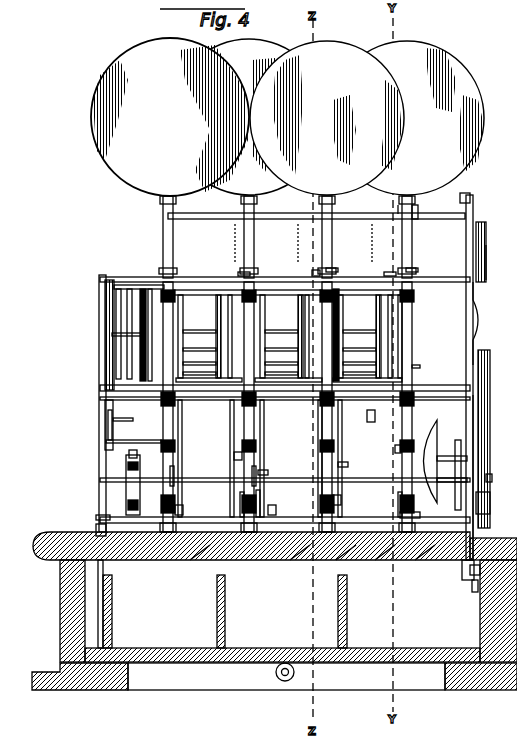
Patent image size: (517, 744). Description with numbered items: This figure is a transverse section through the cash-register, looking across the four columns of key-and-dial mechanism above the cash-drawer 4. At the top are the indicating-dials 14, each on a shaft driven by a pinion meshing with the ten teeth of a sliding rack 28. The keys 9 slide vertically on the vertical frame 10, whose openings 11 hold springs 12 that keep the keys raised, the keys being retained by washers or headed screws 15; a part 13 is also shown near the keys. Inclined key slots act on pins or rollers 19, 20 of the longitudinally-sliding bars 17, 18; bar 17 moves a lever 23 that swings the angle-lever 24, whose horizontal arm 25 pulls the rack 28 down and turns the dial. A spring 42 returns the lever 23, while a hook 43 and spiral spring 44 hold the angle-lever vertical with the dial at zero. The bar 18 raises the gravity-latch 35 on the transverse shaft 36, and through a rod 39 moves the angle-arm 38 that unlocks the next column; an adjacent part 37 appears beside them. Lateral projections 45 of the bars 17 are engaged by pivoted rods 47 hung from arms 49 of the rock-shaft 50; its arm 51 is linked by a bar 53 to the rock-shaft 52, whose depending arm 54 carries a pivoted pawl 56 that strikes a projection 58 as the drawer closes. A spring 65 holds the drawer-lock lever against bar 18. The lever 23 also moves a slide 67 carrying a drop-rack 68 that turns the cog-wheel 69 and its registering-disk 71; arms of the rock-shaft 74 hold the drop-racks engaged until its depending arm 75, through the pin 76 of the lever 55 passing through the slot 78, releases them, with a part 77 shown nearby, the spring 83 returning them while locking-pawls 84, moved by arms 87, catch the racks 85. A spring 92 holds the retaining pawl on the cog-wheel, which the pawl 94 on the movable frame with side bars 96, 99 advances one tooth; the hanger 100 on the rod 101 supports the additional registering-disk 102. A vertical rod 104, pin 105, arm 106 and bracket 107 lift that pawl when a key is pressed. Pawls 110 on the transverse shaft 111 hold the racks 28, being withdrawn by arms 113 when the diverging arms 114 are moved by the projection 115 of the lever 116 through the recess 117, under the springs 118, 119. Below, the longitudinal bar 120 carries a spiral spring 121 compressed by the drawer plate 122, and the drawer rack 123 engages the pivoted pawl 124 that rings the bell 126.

The cash-drawer 4 is at (466, 625).
The keys 9 is at (150, 444).
The vertical frame 10 is at (160, 400).
The openings 11 is at (264, 440).
The springs 12 is at (176, 418).
The rod 13 is at (228, 335).
The indicating-dials 14 is at (258, 46).
The washers or headed screws 15 is at (234, 458).
The longitudinally-sliding bar 17 is at (480, 308).
The longitudinally-sliding bar 18 is at (163, 518).
The pins or rollers 19 is at (492, 478).
The pins or rollers 20 is at (398, 500).
The lever 23 is at (148, 380).
The angle-lever 24 is at (140, 368).
The horizontal arm 25 is at (334, 272).
The sliding rack 28 is at (163, 238).
The gravity-latch 35 is at (386, 560).
The transverse shaft 36 is at (346, 560).
The table portion 37 is at (426, 560).
The angle-arm 38 is at (172, 560).
The rod 39 is at (210, 560).
The spring 42 is at (236, 432).
The lateral projection or hook 43 is at (388, 338).
The spiral spring 44 is at (265, 332).
The lateral projections 45 is at (183, 510).
The pivoted rods 47 is at (488, 258).
The arms 49 is at (351, 466).
The rock-shaft 50 is at (260, 510).
The arm 51 is at (130, 452).
The rock-shaft 52 is at (112, 576).
The bar 53 is at (128, 466).
The depending arm 54 is at (100, 518).
The lever 55 is at (106, 442).
The pivoted pawl 56 is at (60, 568).
The projection 58 is at (112, 588).
The spiral spring 65 is at (420, 516).
The slide 67 is at (265, 364).
The drop-rack 68 is at (183, 364).
The cog-wheel 69 is at (265, 350).
The registering-disk 71 is at (402, 306).
The rock-shaft 74 is at (105, 418).
The depending arm 75 is at (105, 438).
The pin 76 is at (130, 422).
The bracket 77 is at (490, 500).
The slot 78 is at (96, 528).
The spring 83 is at (128, 505).
The locking-pawls 84 is at (183, 324).
The racks 85 is at (183, 374).
The arms 87 is at (265, 375).
The spring 92 is at (216, 345).
The pawl 94 is at (174, 312).
The side bar 96 is at (242, 272).
The side bar 99 is at (314, 271).
The hanger 100 is at (116, 296).
The rod 101 is at (127, 320).
The additional registering-disk 102 is at (104, 360).
The vertical rod 104 is at (182, 450).
The transverse pin or bar 105 is at (192, 276).
The arm 106 is at (268, 474).
The bracket 107 is at (217, 582).
The spring-actuated pawls 110 is at (418, 210).
The transverse shaft 111 is at (288, 216).
The arms 113 is at (397, 212).
The diverging arms 114 is at (474, 204).
The lateral projection 115 is at (472, 196).
The lever 116 is at (474, 410).
The recess 117 is at (462, 572).
The spring 118 is at (492, 355).
The spring 119 is at (486, 250).
The longitudinal bar 120 is at (270, 676).
The spiral spring 121 is at (316, 672).
The plate 122 is at (280, 681).
The rack 123 is at (472, 592).
The pivoted pawl 124 is at (470, 578).
The bell 126 is at (437, 422).